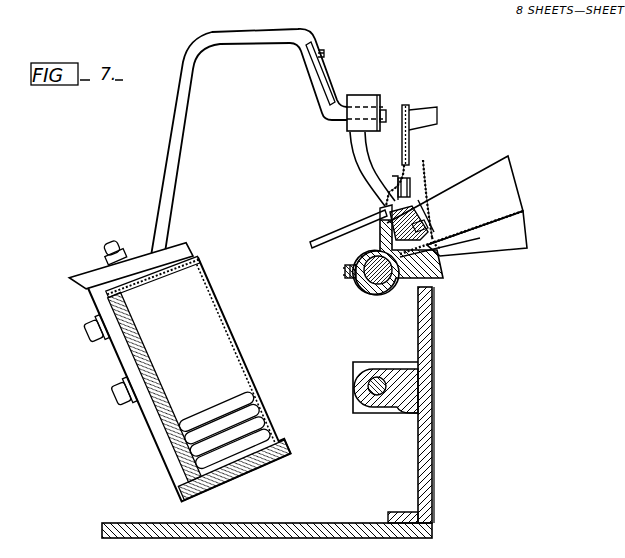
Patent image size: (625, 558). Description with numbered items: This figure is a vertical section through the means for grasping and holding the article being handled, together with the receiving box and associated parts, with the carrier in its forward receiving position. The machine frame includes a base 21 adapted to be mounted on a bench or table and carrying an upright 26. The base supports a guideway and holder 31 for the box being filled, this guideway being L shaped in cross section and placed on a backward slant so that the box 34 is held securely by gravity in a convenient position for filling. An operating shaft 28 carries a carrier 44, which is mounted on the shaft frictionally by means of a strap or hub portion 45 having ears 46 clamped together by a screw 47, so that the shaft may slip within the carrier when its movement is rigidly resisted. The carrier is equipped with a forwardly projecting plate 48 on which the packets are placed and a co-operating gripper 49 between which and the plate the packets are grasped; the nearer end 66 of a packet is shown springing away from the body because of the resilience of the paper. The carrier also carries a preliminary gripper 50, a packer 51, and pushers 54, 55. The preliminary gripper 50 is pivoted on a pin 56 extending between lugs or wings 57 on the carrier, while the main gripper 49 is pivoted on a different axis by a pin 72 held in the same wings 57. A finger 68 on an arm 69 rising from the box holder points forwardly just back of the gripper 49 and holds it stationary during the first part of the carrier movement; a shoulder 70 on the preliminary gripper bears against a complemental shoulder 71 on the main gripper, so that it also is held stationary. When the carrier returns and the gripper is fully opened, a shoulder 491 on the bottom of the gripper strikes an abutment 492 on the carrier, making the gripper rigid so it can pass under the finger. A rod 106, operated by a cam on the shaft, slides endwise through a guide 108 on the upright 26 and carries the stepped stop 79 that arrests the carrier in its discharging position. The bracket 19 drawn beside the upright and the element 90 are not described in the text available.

The arm 69 is at (259, 38).
The packer 51 is at (367, 100).
The finger 68 is at (384, 112).
The gripper 49 is at (412, 110).
The stop 79 is at (411, 163).
The shoulder 70 is at (412, 182).
The shoulder 71 is at (398, 178).
The preliminary gripper 50 is at (427, 181).
The wings 57 is at (430, 210).
The pin 56 is at (428, 225).
The pusher 54 is at (422, 226).
The nearer end of packet 66 is at (507, 177).
The plate 48 is at (522, 212).
The pusher 55 is at (442, 249).
The carrier 44 is at (446, 270).
The hub portion 45 is at (390, 295).
The operating shaft 28 is at (370, 292).
The ears 46 is at (345, 271).
The screw 47 is at (357, 282).
The pin 72 is at (381, 234).
The rod 90 is at (334, 229).
The shoulder 491 is at (380, 207).
The abutment 492 is at (383, 223).
The upright 26 is at (430, 305).
The bracket 19 is at (372, 364).
The guide 108 is at (407, 392).
The rod 106 is at (376, 396).
The base 21 is at (187, 531).
The guideway and holder 31 is at (108, 352).
The box 34 is at (112, 352).